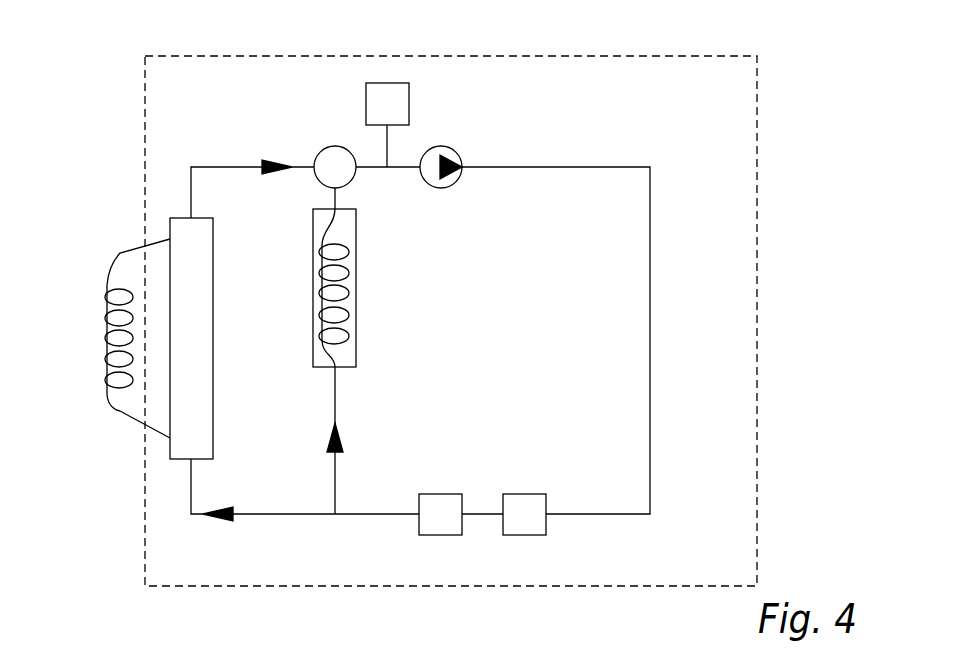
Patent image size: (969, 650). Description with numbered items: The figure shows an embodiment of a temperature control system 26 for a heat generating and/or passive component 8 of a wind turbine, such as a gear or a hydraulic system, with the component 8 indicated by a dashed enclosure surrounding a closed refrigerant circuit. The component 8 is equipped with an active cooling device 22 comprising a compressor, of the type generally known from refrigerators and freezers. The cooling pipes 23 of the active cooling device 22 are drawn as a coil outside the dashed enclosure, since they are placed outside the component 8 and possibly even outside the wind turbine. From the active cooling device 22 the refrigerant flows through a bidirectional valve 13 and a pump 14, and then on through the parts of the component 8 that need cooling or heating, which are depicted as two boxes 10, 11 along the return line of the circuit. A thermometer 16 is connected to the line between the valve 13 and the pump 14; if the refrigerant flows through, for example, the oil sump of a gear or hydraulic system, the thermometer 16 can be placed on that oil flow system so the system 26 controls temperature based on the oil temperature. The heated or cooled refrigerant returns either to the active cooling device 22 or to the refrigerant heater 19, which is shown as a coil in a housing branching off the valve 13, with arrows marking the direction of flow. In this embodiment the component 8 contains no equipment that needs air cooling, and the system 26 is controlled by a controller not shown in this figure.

The heat generating and/or passive component 8 is at (612, 116).
The electric machine 10 is at (441, 518).
The power electronics 11 is at (525, 518).
The bidirectional valve 13 is at (335, 167).
The pump 14 is at (447, 160).
The thermometer 16 is at (387, 102).
The refrigerant heater 19 is at (333, 305).
The active cooling device 22 is at (184, 243).
The cooling pipes 23 is at (117, 352).
The temperature control system 26 is at (108, 66).